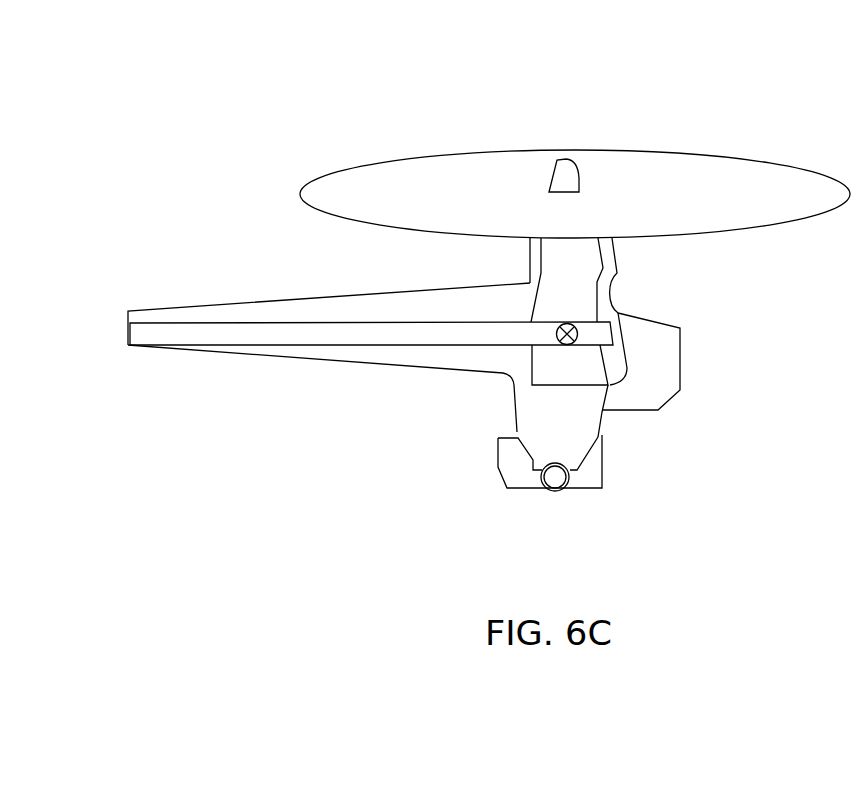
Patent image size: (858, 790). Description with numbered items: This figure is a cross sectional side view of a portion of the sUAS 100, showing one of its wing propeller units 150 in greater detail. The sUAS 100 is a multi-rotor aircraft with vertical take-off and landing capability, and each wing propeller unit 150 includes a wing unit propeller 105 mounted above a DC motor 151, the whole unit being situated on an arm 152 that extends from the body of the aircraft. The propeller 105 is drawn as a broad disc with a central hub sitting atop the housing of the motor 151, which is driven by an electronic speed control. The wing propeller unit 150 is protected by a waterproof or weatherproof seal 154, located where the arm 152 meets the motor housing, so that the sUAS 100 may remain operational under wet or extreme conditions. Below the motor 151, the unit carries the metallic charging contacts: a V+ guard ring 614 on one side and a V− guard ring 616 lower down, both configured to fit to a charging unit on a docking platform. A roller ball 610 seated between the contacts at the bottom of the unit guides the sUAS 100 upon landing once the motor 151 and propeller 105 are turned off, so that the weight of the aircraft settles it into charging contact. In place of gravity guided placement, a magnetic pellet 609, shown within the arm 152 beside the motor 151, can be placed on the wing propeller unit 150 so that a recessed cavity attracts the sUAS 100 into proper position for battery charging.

The sUAS 100 is at (715, 57).
The wing unit propeller 105 is at (422, 157).
The wing propeller unit 150 is at (166, 254).
The DC motor 151 is at (598, 268).
The arm 152 is at (280, 330).
The waterproof or weatherproof seal 154 is at (377, 363).
The magnetic pellet 609 is at (578, 333).
The roller ball 610 is at (563, 487).
The V+ guard ring 614 is at (680, 365).
The V− guard ring 616 is at (507, 488).